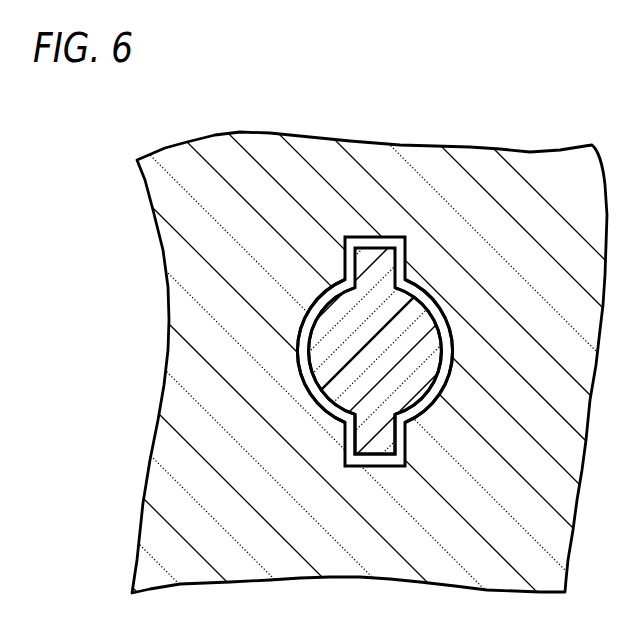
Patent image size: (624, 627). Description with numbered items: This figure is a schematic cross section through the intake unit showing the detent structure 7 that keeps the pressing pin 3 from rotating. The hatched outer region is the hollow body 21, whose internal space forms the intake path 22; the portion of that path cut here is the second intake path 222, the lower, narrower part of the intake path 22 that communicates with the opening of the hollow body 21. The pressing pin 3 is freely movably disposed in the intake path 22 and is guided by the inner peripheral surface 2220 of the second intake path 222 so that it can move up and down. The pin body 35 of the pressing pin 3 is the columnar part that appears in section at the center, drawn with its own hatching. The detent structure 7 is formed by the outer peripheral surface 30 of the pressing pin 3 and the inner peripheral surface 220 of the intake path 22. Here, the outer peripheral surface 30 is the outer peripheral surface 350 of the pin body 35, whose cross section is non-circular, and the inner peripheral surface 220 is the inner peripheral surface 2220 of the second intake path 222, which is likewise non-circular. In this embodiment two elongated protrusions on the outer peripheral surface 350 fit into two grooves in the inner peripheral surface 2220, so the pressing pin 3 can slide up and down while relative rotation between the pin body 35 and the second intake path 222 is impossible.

The detent structure 7 is at (257, 163).
The hollow body 21 is at (472, 153).
The intake path 22 is at (435, 303).
The second intake path 222 is at (432, 310).
The inner peripheral surface 220 is at (314, 306).
The inner peripheral surface 2220 is at (306, 345).
The outer peripheral surface 30 is at (325, 404).
The outer peripheral surface 350 is at (339, 411).
The pressing pin 3 is at (426, 386).
The pin body 35 is at (409, 399).